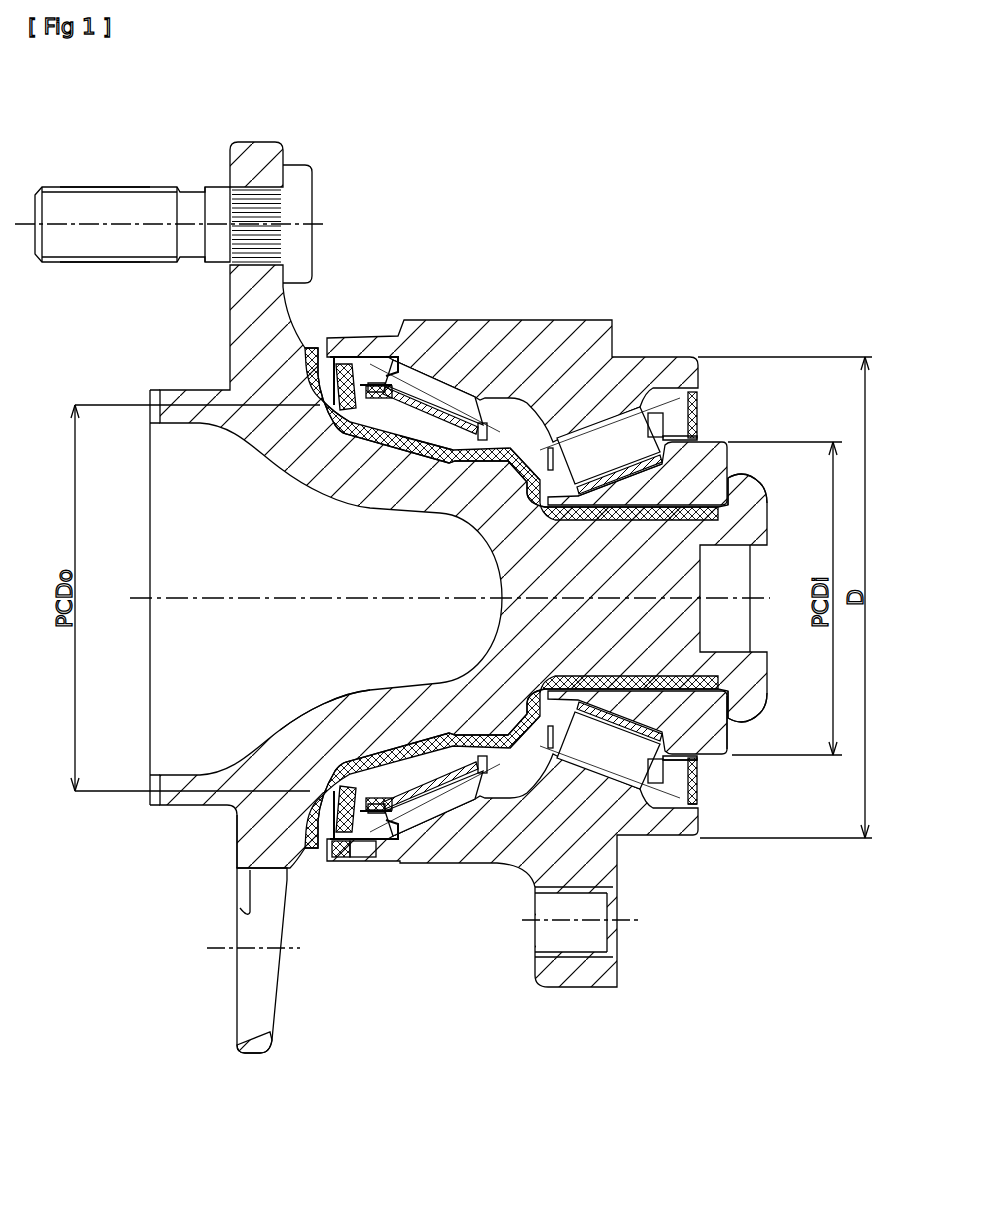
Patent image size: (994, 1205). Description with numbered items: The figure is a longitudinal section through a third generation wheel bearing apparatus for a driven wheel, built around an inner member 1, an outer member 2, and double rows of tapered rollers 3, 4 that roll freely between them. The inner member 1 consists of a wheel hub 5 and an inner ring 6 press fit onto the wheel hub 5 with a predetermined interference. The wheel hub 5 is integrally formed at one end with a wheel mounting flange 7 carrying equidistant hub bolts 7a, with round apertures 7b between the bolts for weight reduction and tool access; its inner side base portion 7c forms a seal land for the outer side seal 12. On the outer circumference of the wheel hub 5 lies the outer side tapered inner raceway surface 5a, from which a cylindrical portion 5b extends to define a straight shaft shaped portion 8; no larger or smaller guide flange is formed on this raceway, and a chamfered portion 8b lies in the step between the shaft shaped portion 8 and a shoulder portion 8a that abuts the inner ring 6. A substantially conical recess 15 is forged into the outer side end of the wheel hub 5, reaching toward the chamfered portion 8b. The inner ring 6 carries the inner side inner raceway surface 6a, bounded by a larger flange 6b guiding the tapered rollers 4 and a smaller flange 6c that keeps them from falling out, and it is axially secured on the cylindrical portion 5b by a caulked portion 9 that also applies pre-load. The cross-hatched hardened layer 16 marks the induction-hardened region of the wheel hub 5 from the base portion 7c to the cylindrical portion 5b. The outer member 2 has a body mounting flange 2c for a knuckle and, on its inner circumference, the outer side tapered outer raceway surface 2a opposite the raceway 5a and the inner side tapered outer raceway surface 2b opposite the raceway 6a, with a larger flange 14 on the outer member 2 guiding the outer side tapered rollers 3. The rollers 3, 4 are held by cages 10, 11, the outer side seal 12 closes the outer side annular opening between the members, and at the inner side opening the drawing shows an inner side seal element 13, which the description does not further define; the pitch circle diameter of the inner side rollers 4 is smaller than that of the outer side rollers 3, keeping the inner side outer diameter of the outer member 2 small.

The inner member 1 is at (320, 505).
The outer member 2 is at (456, 350).
The outer side tapered outer raceway surface 2a is at (412, 372).
The inner side tapered outer raceway surface 2b is at (578, 422).
The body mounting flange 2c is at (575, 972).
The outer side tapered rollers 3 is at (463, 800).
The inner side tapered rollers 4 is at (623, 783).
The wheel hub 5 is at (277, 427).
The inner raceway surface 5a is at (352, 418).
The cylindrical portion 5b is at (645, 530).
The inner ring 6 is at (677, 465).
The inner raceway surface 6a is at (600, 492).
The larger flange 6b is at (733, 717).
The smaller flange 6c is at (527, 712).
The wheel mounting flange 7 is at (258, 160).
The hub bolts 7a is at (143, 207).
The round apertures 7b is at (238, 917).
The inner side base portion 7c is at (235, 822).
The shaft shaped portion 8 is at (492, 450).
The shoulder portion 8a is at (518, 466).
The chamfered portion 8b is at (462, 452).
The caulked portion 9 is at (745, 500).
The cage 10 is at (350, 843).
The cage 11 is at (693, 806).
The outer side seal 12 is at (342, 842).
The inboard seal 13 is at (705, 790).
The larger flange 14 is at (338, 362).
The conical recess 15 is at (350, 688).
The hardened layer 16 is at (423, 736).